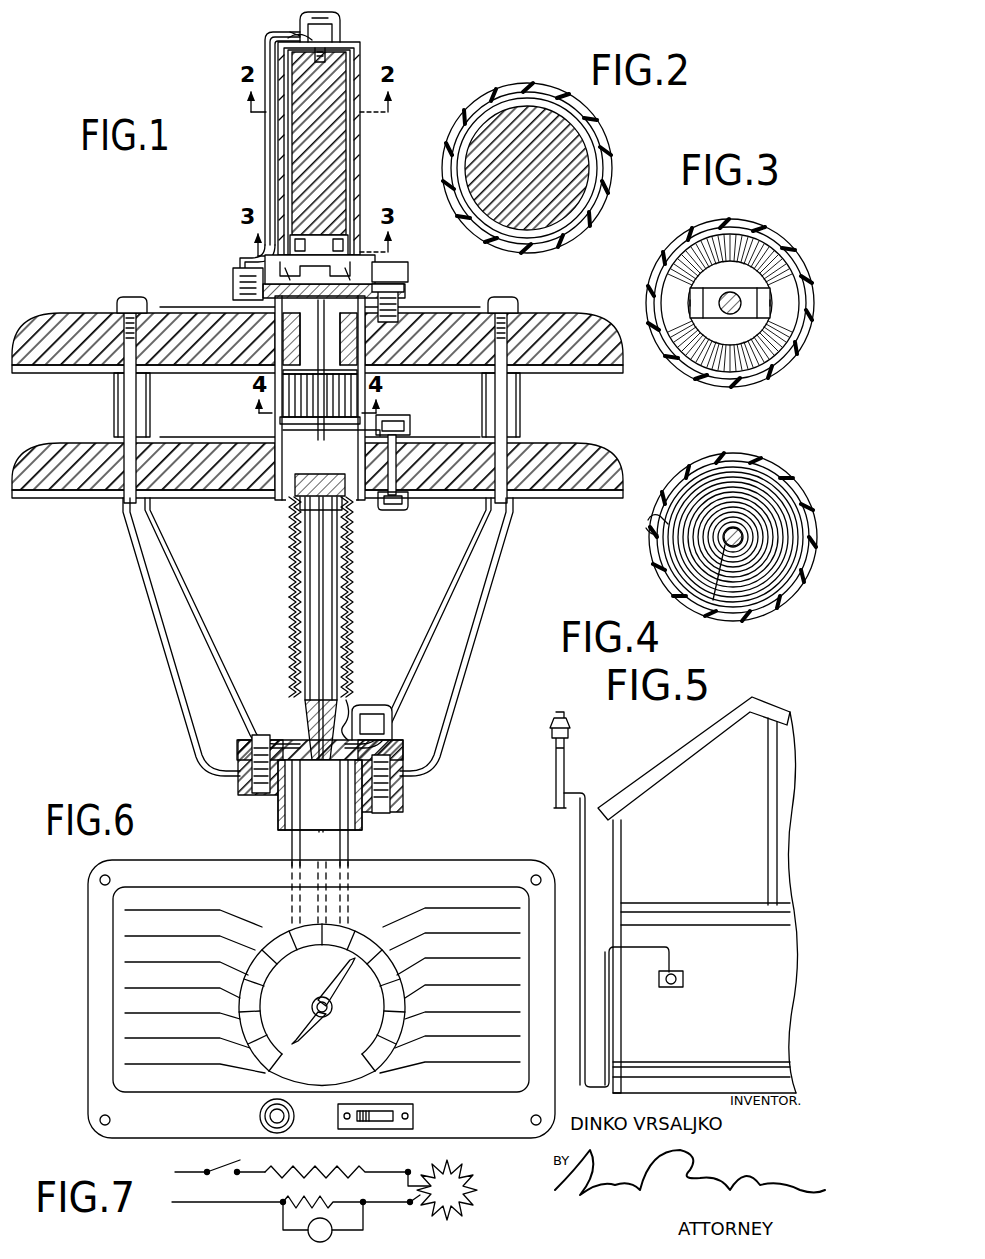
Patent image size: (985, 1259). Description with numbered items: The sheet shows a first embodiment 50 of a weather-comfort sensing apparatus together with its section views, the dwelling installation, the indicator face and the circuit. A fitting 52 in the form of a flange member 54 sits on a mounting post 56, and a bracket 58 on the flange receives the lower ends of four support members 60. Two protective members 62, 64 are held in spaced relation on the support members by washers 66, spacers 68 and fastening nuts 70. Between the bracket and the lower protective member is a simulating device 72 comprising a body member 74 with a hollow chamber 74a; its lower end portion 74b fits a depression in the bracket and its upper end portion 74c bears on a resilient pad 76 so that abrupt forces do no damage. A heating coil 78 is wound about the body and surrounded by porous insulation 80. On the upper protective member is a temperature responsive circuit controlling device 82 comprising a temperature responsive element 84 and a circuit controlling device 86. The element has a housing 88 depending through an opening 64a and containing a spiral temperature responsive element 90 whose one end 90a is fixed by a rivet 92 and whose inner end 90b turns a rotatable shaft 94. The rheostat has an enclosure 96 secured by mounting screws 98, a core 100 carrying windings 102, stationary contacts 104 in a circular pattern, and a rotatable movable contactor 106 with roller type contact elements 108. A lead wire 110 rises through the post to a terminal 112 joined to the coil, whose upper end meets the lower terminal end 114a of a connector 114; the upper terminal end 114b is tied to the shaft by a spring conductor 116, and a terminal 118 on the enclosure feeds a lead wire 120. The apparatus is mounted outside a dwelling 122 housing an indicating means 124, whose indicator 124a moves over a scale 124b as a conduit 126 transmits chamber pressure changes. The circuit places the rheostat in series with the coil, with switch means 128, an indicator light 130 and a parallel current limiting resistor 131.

In FIG. 1, the first embodiment 50 is at (145, 641).
In FIG. 5, the first embodiment 50 is at (547, 722).
In FIG. 1, the fitting 52 is at (405, 792).
In FIG. 1, the flange member 54 is at (240, 777).
In FIG. 1, the mounting post 56 is at (279, 811).
In FIG. 1, the bracket 58 is at (398, 742).
In FIG. 1, the support members 60 is at (470, 623).
In FIG. 1, the protective member 62 is at (52, 492).
In FIG. 1, the protective member 64 is at (52, 366).
In FIG. 1, the opening 64a is at (372, 379).
In FIG. 1, the washers 66 is at (530, 319).
In FIG. 1, the spacers 68 is at (522, 401).
In FIG. 1, the fastening nuts 70 is at (513, 303).
In FIG. 1, the simulating device 72 is at (356, 592).
In FIG. 1, the body member 74 is at (306, 706).
In FIG. 1, the chamber 74a is at (304, 549).
In FIG. 1, the lower end portion 74b is at (350, 716).
In FIG. 1, the upper end portion 74c is at (344, 513).
In FIG. 1, the resilient pad 76 is at (297, 486).
In FIG. 1, the heating coil 78 is at (290, 607).
In FIG. 7, the heating coil 78 is at (330, 1165).
In FIG. 1, the insulation 80 is at (349, 641).
In FIG. 1, the temperature responsive circuit controlling device 82 is at (240, 200).
In FIG. 1, the temperature responsive element 84 is at (245, 395).
In FIG. 1, the circuit controlling device 86 is at (366, 160).
In FIG. 2, the circuit controlling device 86 is at (600, 122).
In FIG. 3, the circuit controlling device 86 is at (700, 380).
In FIG. 7, the circuit controlling device 86 is at (480, 1177).
In FIG. 1, the housing 88 is at (382, 410).
In FIG. 4, the housing 88 is at (655, 576).
In FIG. 1, the spiral temperature responsive element 90 is at (281, 421).
In FIG. 4, the spiral temperature responsive element 90 is at (786, 566).
In FIG. 4, the one end 90a is at (656, 521).
In FIG. 4, the inner end 90b is at (727, 548).
In FIG. 4, the rivet 92 is at (650, 532).
In FIG. 1, the rotatable shaft 94 is at (275, 378).
In FIG. 4, the rotatable shaft 94 is at (745, 548).
In FIG. 1, the enclosure 96 is at (359, 120).
In FIG. 2, the enclosure 96 is at (537, 92).
In FIG. 3, the enclosure 96 is at (810, 265).
In FIG. 1, the mounting screws 98 is at (401, 307).
In FIG. 1, the core 100 is at (306, 36).
In FIG. 2, the core 100 is at (598, 130).
In FIG. 3, the core 100 is at (682, 264).
In FIG. 1, the windings 102 is at (358, 62).
In FIG. 2, the windings 102 is at (590, 152).
In FIG. 1, the stationary contacts 104 is at (347, 243).
In FIG. 3, the stationary contacts 104 is at (752, 252).
In FIG. 1, the rotatable movable contactor 106 is at (386, 272).
In FIG. 3, the rotatable movable contactor 106 is at (745, 318).
In FIG. 1, the roller type contact elements 108 is at (378, 262).
In FIG. 3, the roller type contact elements 108 is at (796, 313).
In FIG. 1, the lead wire 110 is at (352, 822).
In FIG. 1, the terminal 112 is at (372, 712).
In FIG. 1, the connector 114 is at (400, 488).
In FIG. 1, the lower terminal end 114a is at (400, 510).
In FIG. 1, the upper terminal end 114b is at (404, 426).
In FIG. 1, the spring conductor 116 is at (290, 438).
In FIG. 1, the terminal 118 is at (336, 24).
In FIG. 1, the lead wire 120 is at (292, 858).
In FIG. 5, the dwelling 122 is at (685, 748).
In FIG. 5, the indicating means 124 is at (684, 979).
In FIG. 6, the indicating means 124 is at (88, 1071).
In FIG. 6, the indicator 124a is at (302, 1035).
In FIG. 6, the scale 124b is at (405, 982).
In FIG. 1, the conduit 126 is at (352, 845).
In FIG. 6, the switch means 128 is at (412, 1112).
In FIG. 7, the switch means 128 is at (224, 1166).
In FIG. 6, the indicator light 130 is at (259, 1118).
In FIG. 7, the indicator light 130 is at (332, 1233).
In FIG. 7, the current limiting resistor 131 is at (300, 1200).